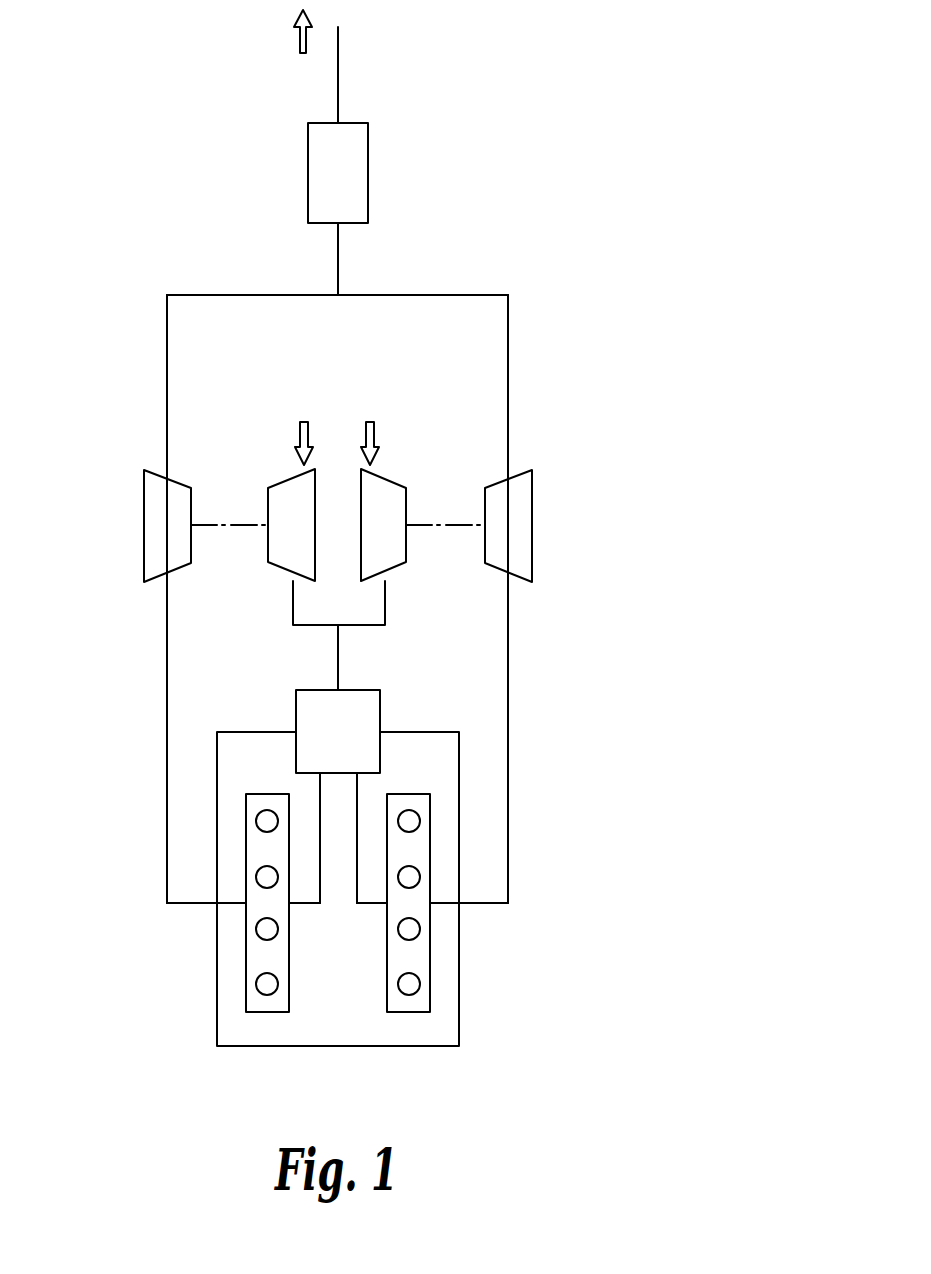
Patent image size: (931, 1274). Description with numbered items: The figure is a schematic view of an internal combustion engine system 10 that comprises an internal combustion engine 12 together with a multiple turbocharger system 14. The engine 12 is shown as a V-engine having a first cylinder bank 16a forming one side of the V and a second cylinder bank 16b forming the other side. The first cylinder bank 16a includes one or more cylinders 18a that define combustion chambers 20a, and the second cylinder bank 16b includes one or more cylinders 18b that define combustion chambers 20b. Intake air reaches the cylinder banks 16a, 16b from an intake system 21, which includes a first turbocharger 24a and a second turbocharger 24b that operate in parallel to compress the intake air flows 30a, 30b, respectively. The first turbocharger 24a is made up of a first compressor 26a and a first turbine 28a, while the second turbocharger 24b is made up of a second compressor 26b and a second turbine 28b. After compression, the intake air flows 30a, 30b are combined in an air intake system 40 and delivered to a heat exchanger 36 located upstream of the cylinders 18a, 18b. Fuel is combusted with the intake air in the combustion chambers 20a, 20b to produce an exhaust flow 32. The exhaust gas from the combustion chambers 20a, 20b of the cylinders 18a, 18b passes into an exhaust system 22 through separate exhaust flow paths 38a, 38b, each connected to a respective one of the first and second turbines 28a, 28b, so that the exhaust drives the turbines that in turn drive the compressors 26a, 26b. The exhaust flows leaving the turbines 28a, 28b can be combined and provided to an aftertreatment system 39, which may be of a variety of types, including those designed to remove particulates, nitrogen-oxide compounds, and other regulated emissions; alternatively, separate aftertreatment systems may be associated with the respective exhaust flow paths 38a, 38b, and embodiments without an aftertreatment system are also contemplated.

The internal combustion engine system 10 is at (778, 382).
The internal combustion engine 12 is at (458, 1032).
The multiple turbocharger system 14 is at (122, 466).
The first cylinder bank 16a is at (260, 1013).
The second cylinder bank 16b is at (415, 1013).
The cylinders 18a is at (265, 983).
The cylinders 18b is at (418, 927).
The combustion chambers 20a is at (265, 929).
The combustion chambers 20b is at (413, 982).
The intake system 21 is at (363, 372).
The exhaust system 22 is at (440, 120).
The first turbocharger 24a is at (209, 563).
The second turbocharger 24b is at (446, 559).
The first compressor 26a is at (282, 502).
The second compressor 26b is at (387, 500).
The first turbine 28a is at (143, 553).
The second turbine 28b is at (532, 505).
The intake air flow 30a is at (298, 432).
The intake air flow 30b is at (363, 427).
The exhaust flow 32 is at (297, 37).
The heat exchanger 36 is at (318, 712).
The exhaust flow path 38a is at (167, 710).
The exhaust flow path 38b is at (508, 707).
The aftertreatment system 39 is at (317, 177).
The air intake system 40 is at (352, 661).